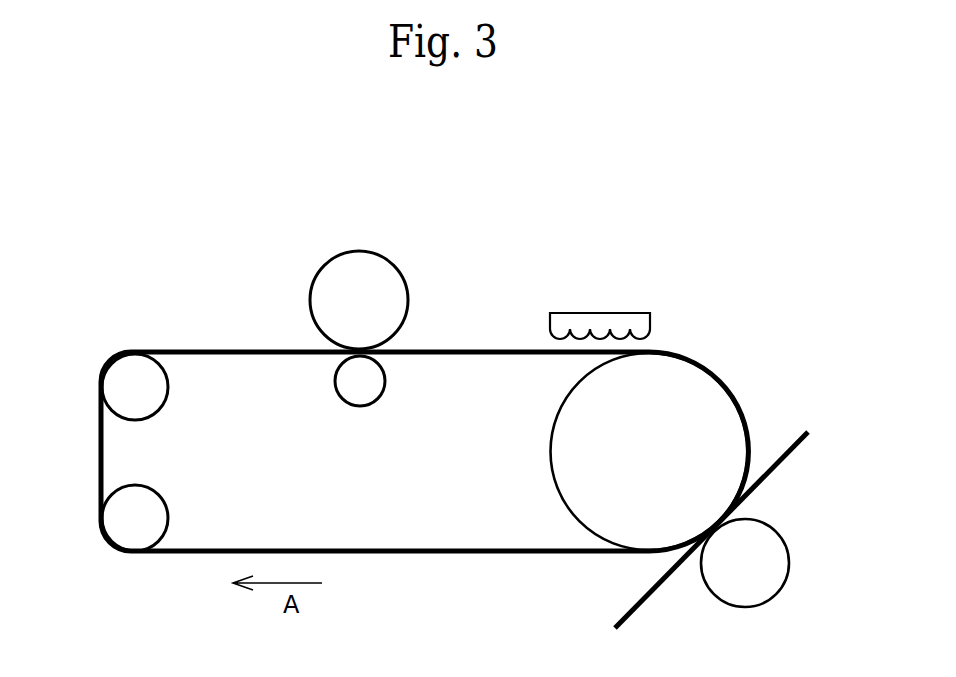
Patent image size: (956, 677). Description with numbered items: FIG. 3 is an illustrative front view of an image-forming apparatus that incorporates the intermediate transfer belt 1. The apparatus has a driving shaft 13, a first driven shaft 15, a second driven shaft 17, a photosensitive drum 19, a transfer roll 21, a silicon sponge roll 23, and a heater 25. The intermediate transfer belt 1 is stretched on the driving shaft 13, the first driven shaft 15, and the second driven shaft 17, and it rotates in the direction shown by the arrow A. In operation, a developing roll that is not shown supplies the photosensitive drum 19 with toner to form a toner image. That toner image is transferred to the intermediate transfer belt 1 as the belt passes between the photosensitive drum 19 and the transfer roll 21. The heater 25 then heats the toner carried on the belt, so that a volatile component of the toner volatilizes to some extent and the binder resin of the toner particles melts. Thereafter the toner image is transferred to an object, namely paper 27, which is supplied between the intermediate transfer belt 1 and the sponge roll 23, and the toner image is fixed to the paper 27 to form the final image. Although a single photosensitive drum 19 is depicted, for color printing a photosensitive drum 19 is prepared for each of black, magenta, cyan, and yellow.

The intermediate transfer belt 1 is at (472, 554).
The driving shaft 13 is at (697, 400).
The first driven shaft 15 is at (130, 397).
The second driven shaft 17 is at (130, 518).
The photosensitive drum 19 is at (388, 307).
The transfer roll 21 is at (357, 382).
The silicon sponge roll 23 is at (752, 562).
The heater 25 is at (600, 318).
The object (paper) 27 is at (805, 442).